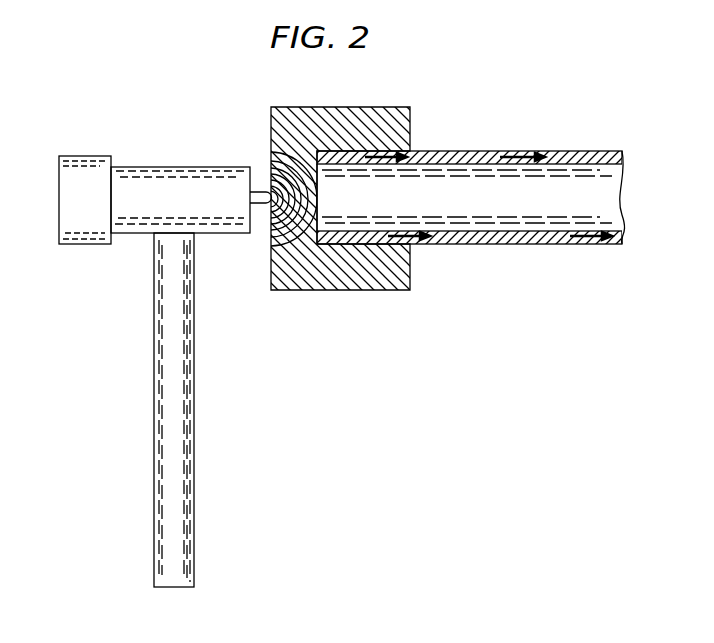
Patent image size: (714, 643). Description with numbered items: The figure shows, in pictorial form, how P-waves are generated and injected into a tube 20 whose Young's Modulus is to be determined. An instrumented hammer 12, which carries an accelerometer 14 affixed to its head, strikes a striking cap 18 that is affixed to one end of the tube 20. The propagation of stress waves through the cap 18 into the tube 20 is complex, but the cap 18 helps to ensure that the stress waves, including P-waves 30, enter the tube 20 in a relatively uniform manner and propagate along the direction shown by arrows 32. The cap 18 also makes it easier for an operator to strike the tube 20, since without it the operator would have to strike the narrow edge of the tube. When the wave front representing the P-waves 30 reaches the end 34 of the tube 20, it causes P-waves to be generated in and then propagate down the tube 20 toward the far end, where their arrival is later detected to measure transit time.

The instrumented hammer 12 is at (176, 167).
The accelerometer 14 is at (88, 156).
The striking cap 18 is at (367, 107).
The tube 20 is at (455, 151).
The P-waves 30 is at (285, 165).
The arrows 32 is at (520, 151).
The end of tube 34 is at (317, 200).